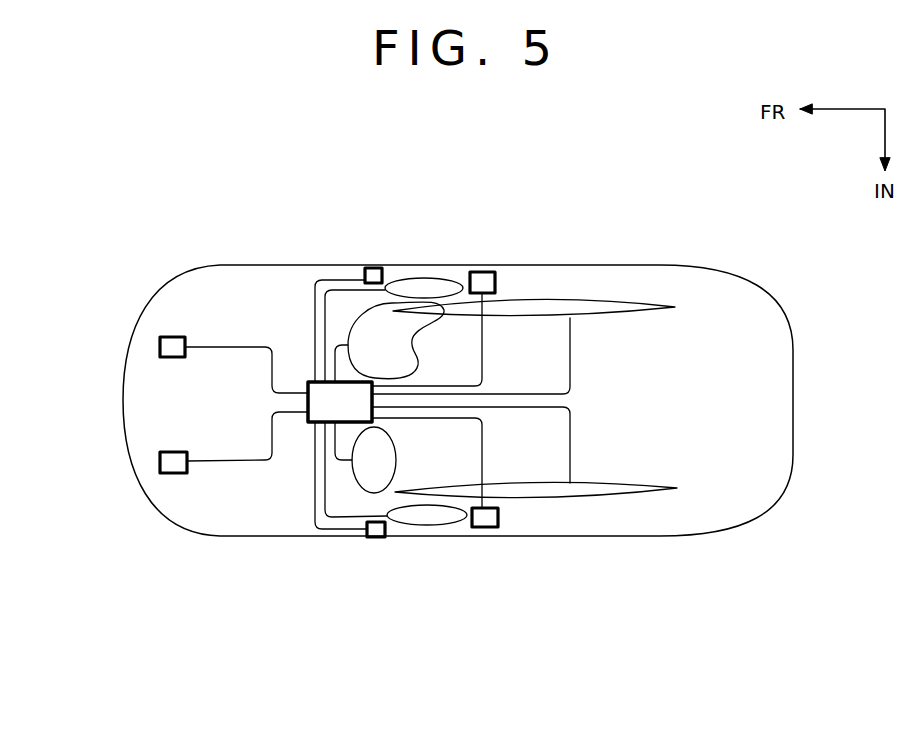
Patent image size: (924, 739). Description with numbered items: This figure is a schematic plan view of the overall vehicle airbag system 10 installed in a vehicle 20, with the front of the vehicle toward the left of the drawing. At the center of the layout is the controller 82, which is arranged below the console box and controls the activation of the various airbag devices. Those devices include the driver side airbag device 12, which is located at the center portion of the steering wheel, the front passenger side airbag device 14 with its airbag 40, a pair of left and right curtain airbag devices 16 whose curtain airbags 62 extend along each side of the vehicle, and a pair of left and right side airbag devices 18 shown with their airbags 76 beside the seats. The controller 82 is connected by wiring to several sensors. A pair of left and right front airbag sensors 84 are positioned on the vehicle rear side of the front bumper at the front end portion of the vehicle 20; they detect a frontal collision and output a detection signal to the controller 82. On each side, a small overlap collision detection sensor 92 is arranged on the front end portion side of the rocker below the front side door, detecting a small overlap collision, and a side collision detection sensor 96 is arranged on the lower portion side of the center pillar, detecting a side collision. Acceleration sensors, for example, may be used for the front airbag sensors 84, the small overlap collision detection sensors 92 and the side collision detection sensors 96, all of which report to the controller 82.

The vehicle airbag system 10 is at (458, 349).
The vehicle 20 is at (617, 265).
The driver side airbag device 12 is at (397, 460).
The front passenger side airbag device 14 is at (412, 347).
The airbag 40 is at (453, 340).
The curtain airbag device 16 is at (625, 300).
The curtain airbag 62 is at (580, 400).
The side airbag device 18 is at (423, 278).
The seat cushion 76 is at (436, 390).
The controller 82 is at (310, 413).
The front airbag sensor 84 is at (160, 347).
The small overlap collision detection sensor 92 is at (370, 268).
The side collision detection sensor 96 is at (482, 272).